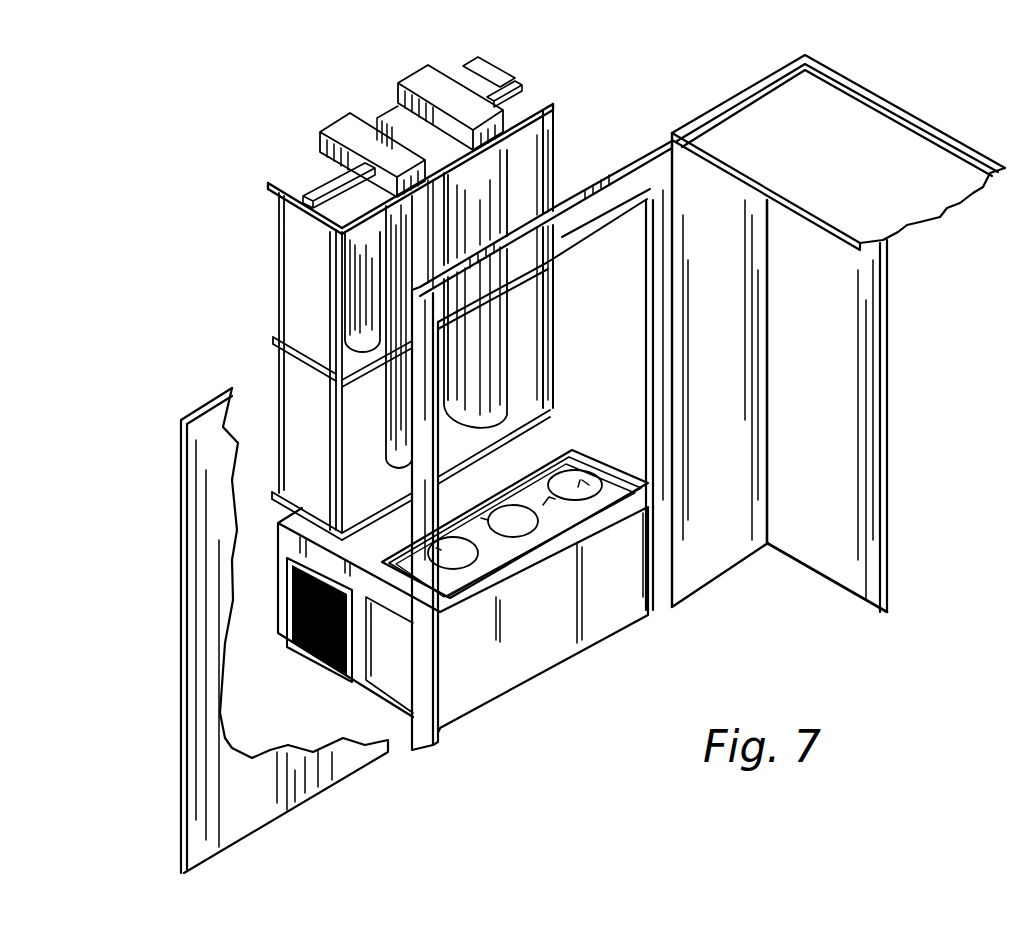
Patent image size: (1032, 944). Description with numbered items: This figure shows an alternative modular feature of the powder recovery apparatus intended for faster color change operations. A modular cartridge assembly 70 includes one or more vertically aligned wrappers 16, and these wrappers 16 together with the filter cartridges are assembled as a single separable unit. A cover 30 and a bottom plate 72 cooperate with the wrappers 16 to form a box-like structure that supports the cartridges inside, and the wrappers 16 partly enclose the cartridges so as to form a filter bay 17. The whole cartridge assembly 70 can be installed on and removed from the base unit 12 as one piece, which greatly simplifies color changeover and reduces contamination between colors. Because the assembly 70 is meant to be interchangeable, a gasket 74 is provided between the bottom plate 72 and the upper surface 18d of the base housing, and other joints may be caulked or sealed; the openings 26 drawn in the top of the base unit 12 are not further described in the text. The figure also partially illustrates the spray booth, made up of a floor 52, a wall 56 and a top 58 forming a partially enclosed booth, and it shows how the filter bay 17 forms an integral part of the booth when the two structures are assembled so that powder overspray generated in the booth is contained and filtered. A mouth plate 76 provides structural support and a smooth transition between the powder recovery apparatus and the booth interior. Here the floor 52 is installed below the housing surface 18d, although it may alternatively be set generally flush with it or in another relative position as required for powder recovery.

The modular cartridge assembly 70 is at (225, 182).
The cover 30 is at (308, 158).
The wrapper 16 is at (287, 400).
The filter bay 17 is at (526, 306).
The bottom plate 72 is at (519, 413).
The mouth plate 76 is at (665, 297).
The top 58 is at (905, 135).
The wall 56 is at (840, 482).
The floor 52 is at (773, 634).
The gasket 74 is at (612, 474).
The burners 26 is at (588, 468).
The upper surface of the base housing 18d is at (578, 487).
The base unit 12 is at (316, 696).